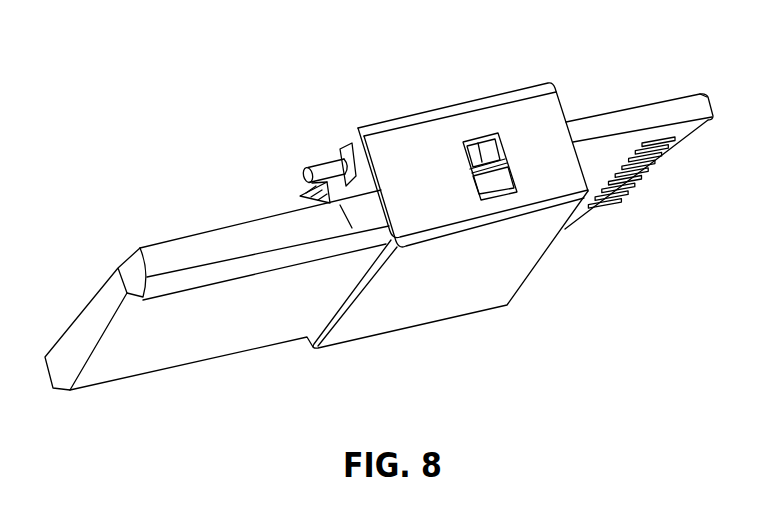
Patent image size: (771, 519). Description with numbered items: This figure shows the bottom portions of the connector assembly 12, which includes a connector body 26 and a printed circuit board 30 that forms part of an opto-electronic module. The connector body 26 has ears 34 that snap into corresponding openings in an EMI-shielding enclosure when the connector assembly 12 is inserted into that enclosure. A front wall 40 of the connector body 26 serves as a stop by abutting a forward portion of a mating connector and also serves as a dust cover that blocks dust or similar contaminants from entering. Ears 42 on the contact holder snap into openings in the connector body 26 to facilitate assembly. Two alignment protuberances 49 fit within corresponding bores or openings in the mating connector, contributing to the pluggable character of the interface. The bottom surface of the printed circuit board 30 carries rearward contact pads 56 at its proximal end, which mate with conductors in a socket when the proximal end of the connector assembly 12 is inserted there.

The connector assembly 12 is at (229, 54).
The connector body 26 is at (156, 248).
The printed circuit board 30 is at (617, 121).
The ears 34 is at (487, 150).
The front wall 40 is at (353, 145).
The ears 42 is at (495, 183).
The alignment protuberances 49 is at (314, 162).
The rearward contact pads 56 is at (628, 188).